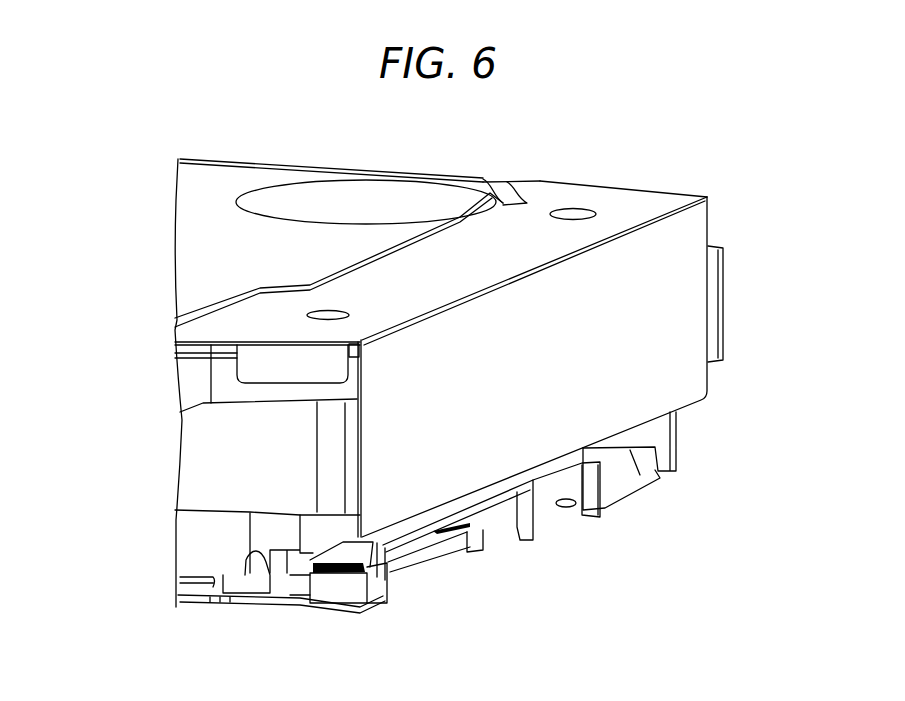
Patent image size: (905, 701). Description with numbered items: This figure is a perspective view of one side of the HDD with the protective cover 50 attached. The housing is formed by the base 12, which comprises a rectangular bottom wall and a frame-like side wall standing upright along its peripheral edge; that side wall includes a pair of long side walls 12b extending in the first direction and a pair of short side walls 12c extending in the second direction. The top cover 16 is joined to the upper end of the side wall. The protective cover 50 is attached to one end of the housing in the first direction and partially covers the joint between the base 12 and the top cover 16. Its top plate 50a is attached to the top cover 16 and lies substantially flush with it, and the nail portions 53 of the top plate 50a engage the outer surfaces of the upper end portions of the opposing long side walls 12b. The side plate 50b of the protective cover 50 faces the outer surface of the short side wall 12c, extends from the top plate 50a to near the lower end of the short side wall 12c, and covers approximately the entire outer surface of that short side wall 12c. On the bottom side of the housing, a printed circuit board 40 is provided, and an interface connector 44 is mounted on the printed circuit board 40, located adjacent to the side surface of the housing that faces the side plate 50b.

The base 12 is at (375, 386).
The long side wall 12b is at (200, 455).
The short side wall 12c is at (713, 295).
The top cover 16 is at (236, 186).
The printed circuit board 40 is at (284, 588).
The interface connector 44 is at (493, 527).
The protective cover 50 is at (540, 329).
The top plate 50a is at (595, 195).
The side plate 50b is at (673, 248).
The nail portion 53 is at (255, 373).